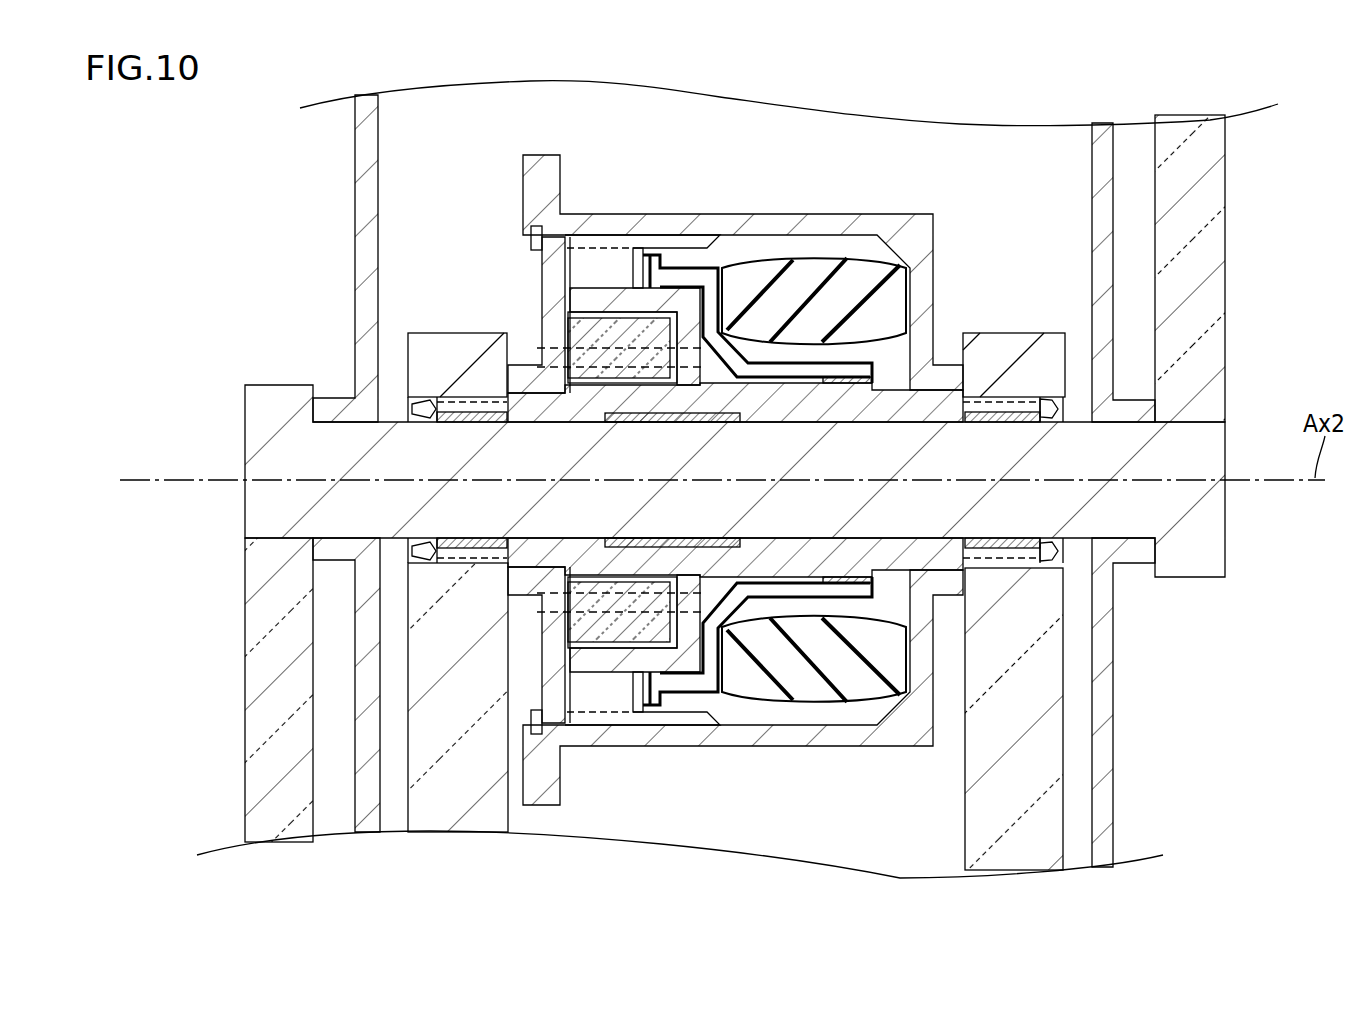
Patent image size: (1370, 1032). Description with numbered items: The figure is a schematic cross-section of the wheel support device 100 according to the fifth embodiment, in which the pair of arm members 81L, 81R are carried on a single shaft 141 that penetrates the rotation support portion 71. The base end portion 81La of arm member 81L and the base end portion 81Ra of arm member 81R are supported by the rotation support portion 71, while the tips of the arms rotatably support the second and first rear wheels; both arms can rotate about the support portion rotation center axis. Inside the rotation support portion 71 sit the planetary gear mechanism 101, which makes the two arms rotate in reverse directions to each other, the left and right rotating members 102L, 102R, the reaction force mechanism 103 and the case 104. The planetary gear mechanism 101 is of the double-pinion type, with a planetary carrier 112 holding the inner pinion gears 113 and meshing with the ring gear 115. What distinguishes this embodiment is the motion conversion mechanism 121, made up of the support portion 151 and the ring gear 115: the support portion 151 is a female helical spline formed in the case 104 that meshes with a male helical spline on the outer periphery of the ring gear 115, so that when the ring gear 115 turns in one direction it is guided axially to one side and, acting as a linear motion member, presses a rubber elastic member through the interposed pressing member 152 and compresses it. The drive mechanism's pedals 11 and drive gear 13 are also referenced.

The drive unit 100 is at (1207, 77).
The pedals 11 is at (1225, 246).
The drive gear 13 is at (355, 193).
The rotation support portion 71 is at (905, 214).
The arm member 81L is at (466, 818).
The arm member 81R is at (1005, 864).
The base end portion 81La is at (438, 333).
The base end portion 81Ra is at (1005, 333).
The planetary gear mechanism 101 is at (623, 301).
The rotating member 102L is at (478, 405).
The rotating member 102R is at (806, 300).
The reaction force mechanism 103 is at (872, 262).
The case 104 is at (802, 405).
The planetary carrier 112 is at (687, 325).
The inner pinion gears 113 is at (600, 312).
The ring gear 115 is at (625, 414).
The motion conversion mechanism 121 is at (600, 230).
The shaft 141 is at (1216, 520).
The support portion 151 is at (676, 250).
The pressing member 152 is at (735, 252).